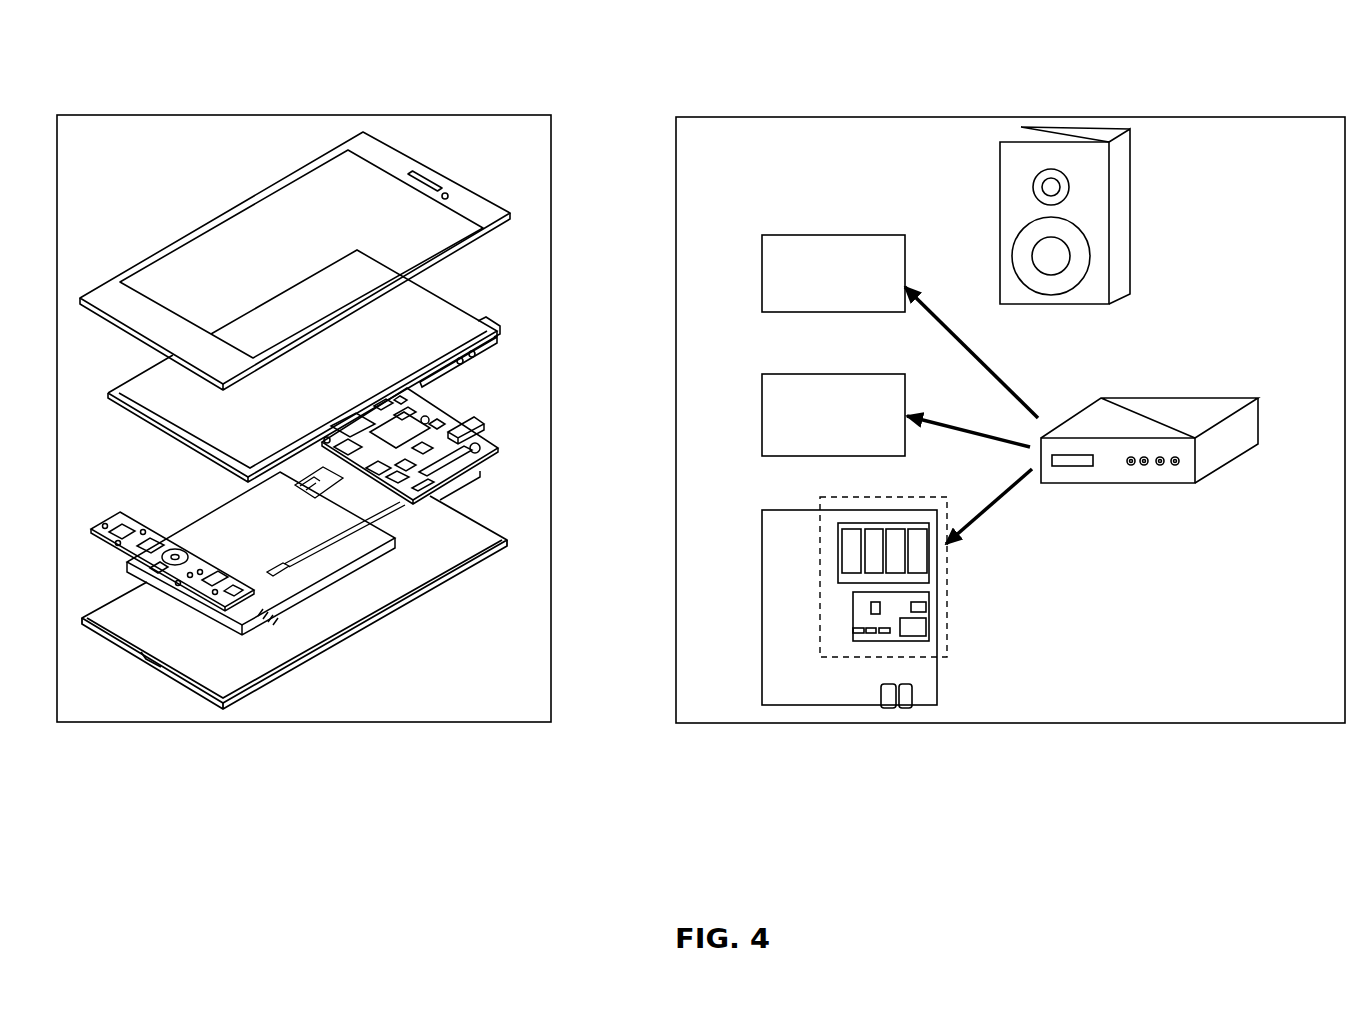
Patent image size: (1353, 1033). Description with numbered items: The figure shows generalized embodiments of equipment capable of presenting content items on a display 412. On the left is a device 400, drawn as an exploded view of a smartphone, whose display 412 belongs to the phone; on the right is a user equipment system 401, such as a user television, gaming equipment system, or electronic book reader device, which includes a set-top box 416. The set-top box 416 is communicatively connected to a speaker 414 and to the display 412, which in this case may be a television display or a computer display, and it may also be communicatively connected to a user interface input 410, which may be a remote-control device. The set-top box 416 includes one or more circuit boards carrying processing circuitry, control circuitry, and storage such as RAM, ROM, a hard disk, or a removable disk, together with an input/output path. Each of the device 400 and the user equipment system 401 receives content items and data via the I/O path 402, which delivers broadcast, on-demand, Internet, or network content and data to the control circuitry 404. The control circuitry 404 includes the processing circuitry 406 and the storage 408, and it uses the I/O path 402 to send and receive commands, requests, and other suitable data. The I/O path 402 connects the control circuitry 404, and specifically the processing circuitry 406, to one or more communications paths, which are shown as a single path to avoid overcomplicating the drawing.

The device 400 is at (153, 64).
The user equipment system 401 is at (1203, 78).
The I/O path 402 is at (160, 571).
The control circuitry 404 is at (820, 621).
The processing circuitry 406 is at (853, 599).
The storage 408 is at (839, 546).
The user interface input 410 is at (408, 317).
The display 412 is at (756, 381).
The speaker 414 is at (997, 223).
The set-top box 416 is at (1140, 392).